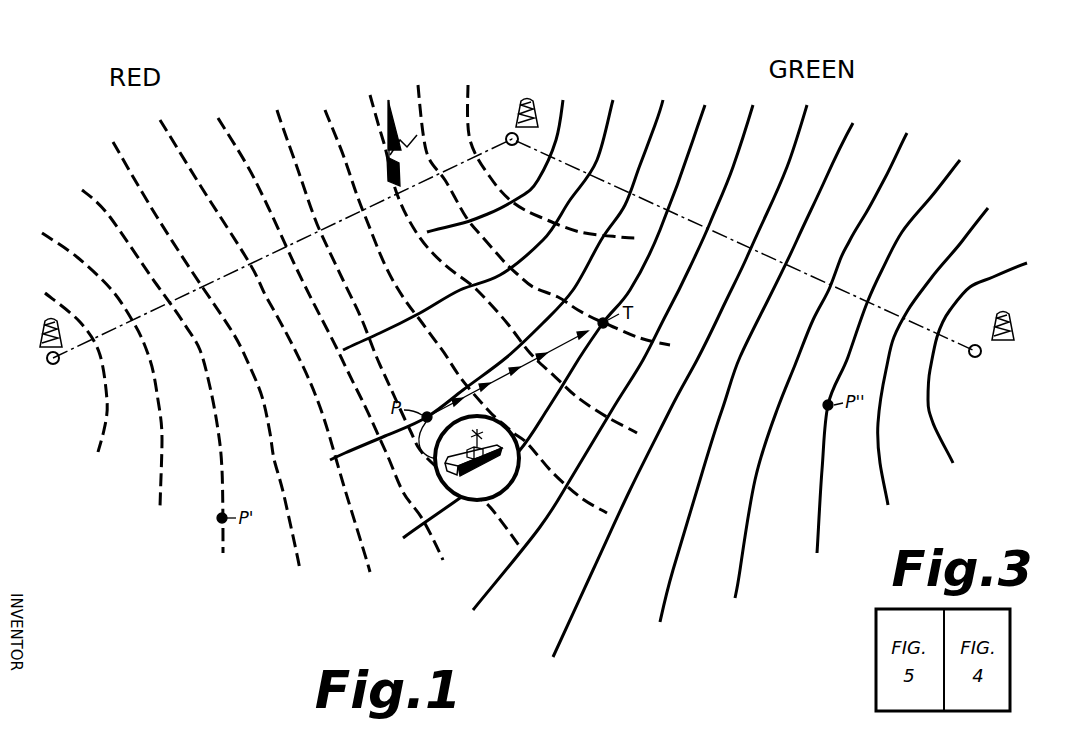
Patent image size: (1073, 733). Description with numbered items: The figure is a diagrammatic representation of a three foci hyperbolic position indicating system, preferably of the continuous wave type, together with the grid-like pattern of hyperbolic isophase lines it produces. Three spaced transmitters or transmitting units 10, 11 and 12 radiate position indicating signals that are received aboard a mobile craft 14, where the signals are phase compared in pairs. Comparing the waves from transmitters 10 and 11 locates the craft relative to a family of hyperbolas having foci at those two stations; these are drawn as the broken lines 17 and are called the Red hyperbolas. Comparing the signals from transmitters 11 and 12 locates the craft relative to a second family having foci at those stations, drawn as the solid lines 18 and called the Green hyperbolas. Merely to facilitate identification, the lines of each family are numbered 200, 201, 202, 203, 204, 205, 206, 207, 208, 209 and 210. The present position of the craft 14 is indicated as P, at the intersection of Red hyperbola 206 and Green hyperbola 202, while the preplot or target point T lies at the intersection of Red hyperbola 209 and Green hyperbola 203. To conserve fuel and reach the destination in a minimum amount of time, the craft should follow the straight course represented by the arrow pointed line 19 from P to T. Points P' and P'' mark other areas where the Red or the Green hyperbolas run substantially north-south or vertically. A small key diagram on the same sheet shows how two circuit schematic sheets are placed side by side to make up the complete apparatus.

The transmitting unit 10 is at (42, 331).
The transmitting unit 11 is at (535, 97).
The transmitting unit 12 is at (1009, 311).
The mobile craft 14 is at (477, 469).
The Red hyperbolas 17 is at (160, 433).
The Green hyperbolas 18 is at (515, 556).
The arrow pointed line 19 is at (539, 357).
The hyperbolic position line 200 is at (299, 267).
The hyperbolic position line 201 is at (329, 296).
The Green hyperbola number 202 is at (371, 318).
The Green hyperbola number 203 is at (412, 326).
The hyperbolic position line 204 is at (461, 346).
The hyperbolic position line 205 is at (522, 372).
The Red hyperbola number 206 is at (571, 354).
The hyperbolic position line 207 is at (620, 342).
The hyperbolic position line 208 is at (669, 313).
The Red hyperbola number 209 is at (708, 283).
The hyperbolic position line 210 is at (754, 262).